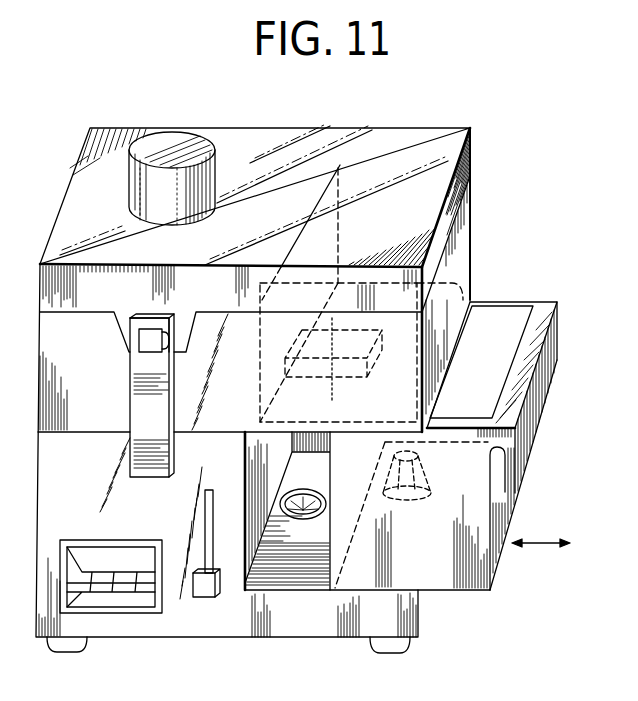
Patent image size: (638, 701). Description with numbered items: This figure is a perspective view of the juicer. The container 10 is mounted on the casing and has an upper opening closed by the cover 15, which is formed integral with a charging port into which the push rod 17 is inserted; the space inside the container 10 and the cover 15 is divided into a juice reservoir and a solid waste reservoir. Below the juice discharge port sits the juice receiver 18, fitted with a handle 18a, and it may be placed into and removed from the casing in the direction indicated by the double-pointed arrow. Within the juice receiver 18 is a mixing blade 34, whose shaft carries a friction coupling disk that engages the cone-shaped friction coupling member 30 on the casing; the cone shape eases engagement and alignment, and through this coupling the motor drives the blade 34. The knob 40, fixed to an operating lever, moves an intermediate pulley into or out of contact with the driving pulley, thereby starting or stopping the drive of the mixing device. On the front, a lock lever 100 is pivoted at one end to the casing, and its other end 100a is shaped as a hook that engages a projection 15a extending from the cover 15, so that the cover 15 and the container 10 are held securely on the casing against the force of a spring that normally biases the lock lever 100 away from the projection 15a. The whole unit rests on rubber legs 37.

The container 10 is at (457, 252).
The cover 15 is at (418, 140).
The projection 15a is at (151, 342).
The push rod 17 is at (170, 147).
The juice receiver 18 is at (453, 573).
The handle 18a is at (538, 408).
The friction coupling member 30 is at (322, 495).
The mixing blade 34 is at (412, 507).
The rubber leg 37 is at (400, 647).
The knob 40 is at (210, 596).
The lock lever 100 is at (138, 384).
The hook end 100a is at (137, 338).